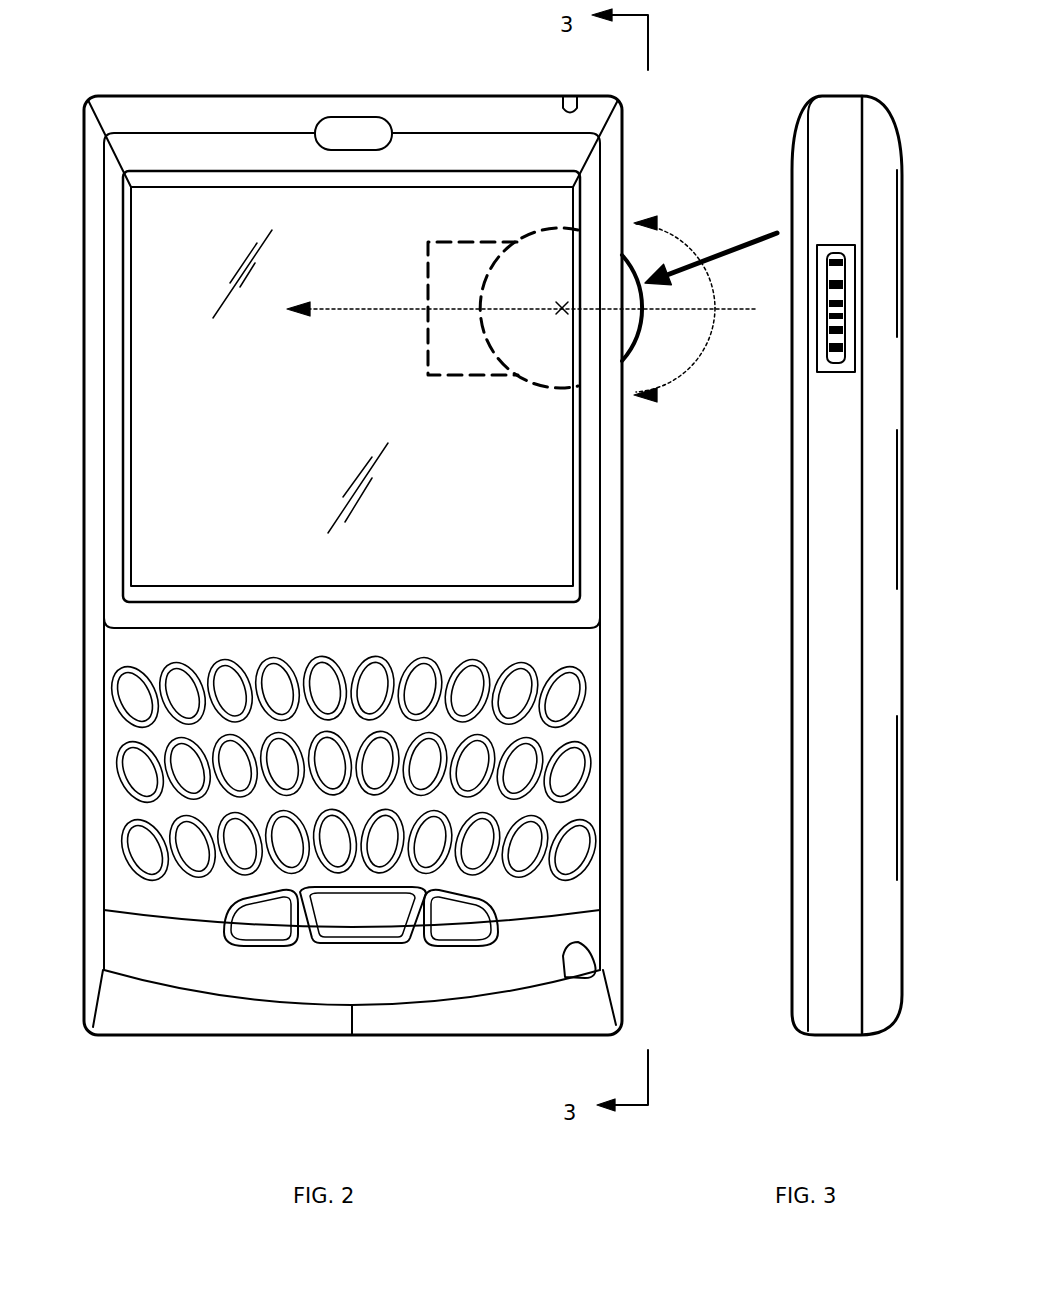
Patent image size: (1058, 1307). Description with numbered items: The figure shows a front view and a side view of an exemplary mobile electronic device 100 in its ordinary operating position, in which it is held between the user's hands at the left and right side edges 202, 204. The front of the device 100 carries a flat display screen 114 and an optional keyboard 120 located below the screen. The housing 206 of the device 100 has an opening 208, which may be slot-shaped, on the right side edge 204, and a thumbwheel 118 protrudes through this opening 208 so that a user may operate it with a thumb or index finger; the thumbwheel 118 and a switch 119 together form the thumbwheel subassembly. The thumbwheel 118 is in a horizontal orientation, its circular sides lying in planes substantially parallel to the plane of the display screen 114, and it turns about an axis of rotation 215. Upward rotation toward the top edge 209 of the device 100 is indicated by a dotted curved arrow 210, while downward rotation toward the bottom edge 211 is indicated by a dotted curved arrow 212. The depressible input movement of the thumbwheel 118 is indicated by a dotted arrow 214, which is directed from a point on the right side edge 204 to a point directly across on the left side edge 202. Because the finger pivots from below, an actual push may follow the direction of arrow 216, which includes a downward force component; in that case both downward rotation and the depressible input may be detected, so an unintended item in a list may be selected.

In FIG. 2, the mobile electronic device 100 is at (268, 1081).
In FIG. 2, the display screen 114 is at (172, 485).
In FIG. 2, the thumbwheel 118 is at (532, 386).
In FIG. 3, the thumbwheel 118 is at (827, 320).
In FIG. 2, the switch 119 is at (458, 378).
In FIG. 2, the keyboard 120 is at (127, 807).
In FIG. 2, the left side edge 202 is at (95, 892).
In FIG. 2, the right side edge 204 is at (607, 937).
In FIG. 2, the housing 206 is at (83, 362).
In FIG. 3, the opening 208 is at (837, 373).
In FIG. 2, the top edge 209 is at (272, 95).
In FIG. 2, the dotted curved arrow 210 is at (678, 222).
In FIG. 2, the bottom edge 211 is at (517, 1037).
In FIG. 2, the dotted curved arrow 212 is at (682, 400).
In FIG. 2, the dotted arrow 214 is at (337, 312).
In FIG. 2, the axis of rotation 215 is at (562, 303).
In FIG. 2, the arrow 216 is at (753, 235).